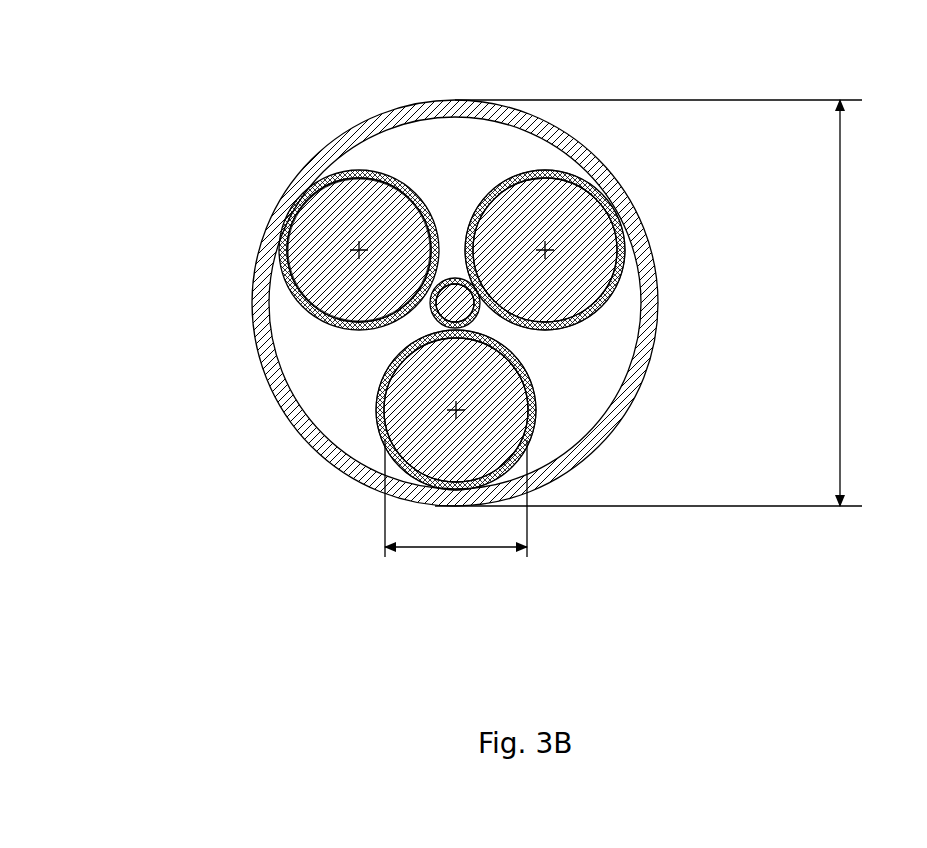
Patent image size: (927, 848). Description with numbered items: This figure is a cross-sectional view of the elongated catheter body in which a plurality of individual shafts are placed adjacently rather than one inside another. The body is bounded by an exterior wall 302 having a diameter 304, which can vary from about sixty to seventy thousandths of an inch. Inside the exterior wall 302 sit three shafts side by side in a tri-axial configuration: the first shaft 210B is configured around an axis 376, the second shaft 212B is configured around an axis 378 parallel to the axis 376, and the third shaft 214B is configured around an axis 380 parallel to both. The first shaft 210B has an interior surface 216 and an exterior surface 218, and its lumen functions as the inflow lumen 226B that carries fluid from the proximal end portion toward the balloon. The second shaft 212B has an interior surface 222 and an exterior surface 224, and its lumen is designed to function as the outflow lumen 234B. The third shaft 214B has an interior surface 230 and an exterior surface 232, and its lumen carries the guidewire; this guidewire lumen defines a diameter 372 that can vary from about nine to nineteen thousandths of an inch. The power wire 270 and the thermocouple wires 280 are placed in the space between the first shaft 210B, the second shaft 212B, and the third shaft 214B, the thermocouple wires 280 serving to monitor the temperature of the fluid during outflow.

The first shaft 210B is at (275, 222).
The second shaft 212B is at (621, 186).
The third shaft 214B is at (498, 463).
The interior surface 216 is at (315, 310).
The exterior surface 218 is at (290, 283).
The interior surface 222 is at (550, 178).
The exterior surface 224 is at (570, 178).
The inflow lumen 226B is at (295, 217).
The interior surface 230 is at (520, 467).
The exterior surface 232 is at (515, 470).
The outflow lumen 234B is at (565, 218).
The power wire 270 is at (430, 307).
The thermocouple wires 280 is at (480, 313).
The exterior wall 302 is at (657, 310).
The diameter 304 is at (842, 285).
The diameter 372 is at (448, 547).
The axis 376 is at (322, 238).
The axis 378 is at (547, 250).
The axis 380 is at (458, 410).